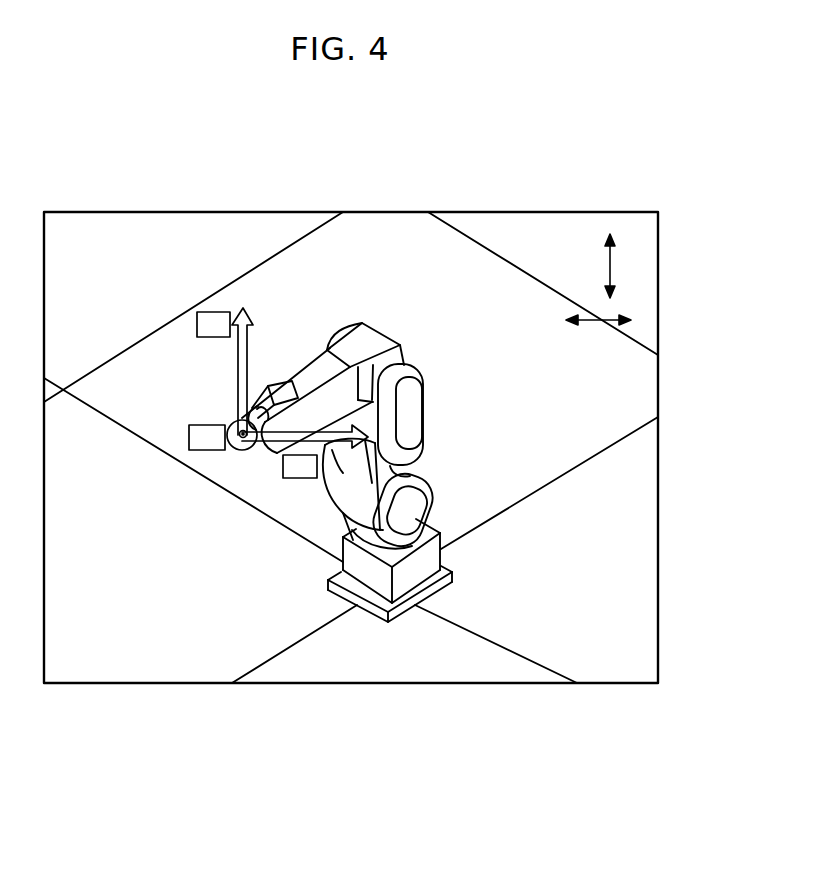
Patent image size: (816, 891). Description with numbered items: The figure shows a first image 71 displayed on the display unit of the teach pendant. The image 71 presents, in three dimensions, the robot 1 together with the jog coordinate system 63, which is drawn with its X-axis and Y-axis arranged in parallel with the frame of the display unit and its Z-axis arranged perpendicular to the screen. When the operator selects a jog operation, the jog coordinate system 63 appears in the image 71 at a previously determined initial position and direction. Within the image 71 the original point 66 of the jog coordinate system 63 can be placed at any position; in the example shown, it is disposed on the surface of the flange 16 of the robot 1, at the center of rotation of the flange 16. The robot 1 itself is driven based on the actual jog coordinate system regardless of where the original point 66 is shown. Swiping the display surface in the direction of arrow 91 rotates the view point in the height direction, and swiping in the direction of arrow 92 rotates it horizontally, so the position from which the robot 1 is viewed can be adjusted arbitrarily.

The robot 1 is at (347, 457).
The flange 16 is at (273, 400).
The jog coordinate system 63 is at (278, 458).
The original point 66 is at (231, 447).
The image 71 is at (545, 212).
The arrow 91 is at (611, 262).
The arrow 92 is at (590, 321).